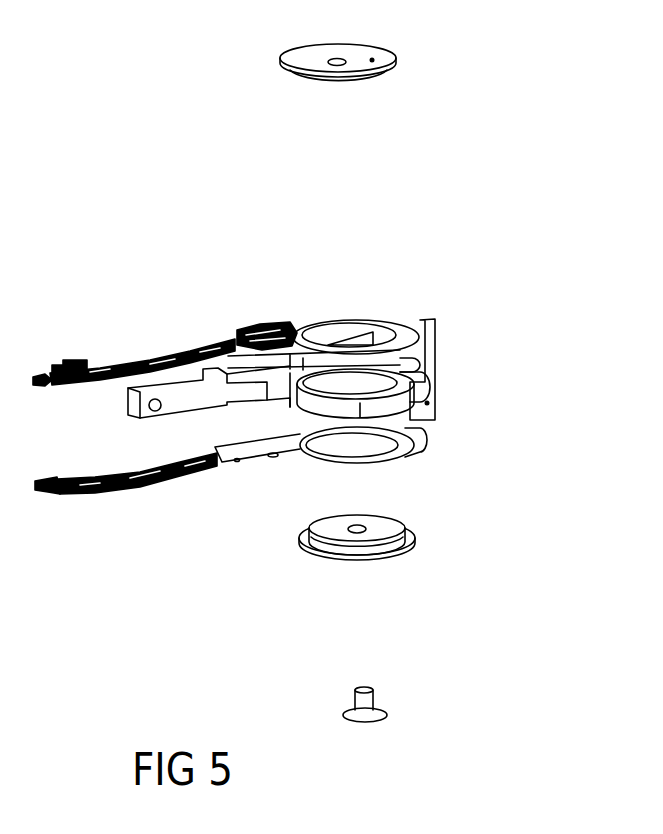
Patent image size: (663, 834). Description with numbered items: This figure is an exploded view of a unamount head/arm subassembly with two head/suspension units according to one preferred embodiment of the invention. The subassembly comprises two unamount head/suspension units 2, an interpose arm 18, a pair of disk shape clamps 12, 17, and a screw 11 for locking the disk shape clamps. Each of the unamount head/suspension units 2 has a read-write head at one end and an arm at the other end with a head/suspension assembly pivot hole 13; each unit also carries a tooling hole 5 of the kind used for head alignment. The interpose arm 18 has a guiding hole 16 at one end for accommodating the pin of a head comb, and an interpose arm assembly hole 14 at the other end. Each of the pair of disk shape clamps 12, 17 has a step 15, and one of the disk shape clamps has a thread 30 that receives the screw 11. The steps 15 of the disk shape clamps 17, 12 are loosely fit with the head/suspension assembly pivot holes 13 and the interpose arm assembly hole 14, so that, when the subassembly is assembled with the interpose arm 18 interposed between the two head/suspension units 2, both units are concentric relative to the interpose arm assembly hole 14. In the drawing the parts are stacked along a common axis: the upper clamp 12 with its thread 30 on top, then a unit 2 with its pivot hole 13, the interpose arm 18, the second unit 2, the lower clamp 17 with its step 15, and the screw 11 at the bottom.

The unamount head/suspension unit 2 is at (405, 332).
The tooling hole 5 is at (246, 326).
The screw 11 is at (377, 723).
The disk shape clamp 12 is at (372, 60).
The head/suspension assembly pivot hole 13 is at (333, 323).
The interpose arm assembly hole 14 is at (362, 380).
The step 15 is at (360, 543).
The guiding hole 16 is at (150, 408).
The disk shape clamp 17 is at (390, 550).
The interpose arm 18 is at (427, 403).
The thread 30 is at (326, 58).